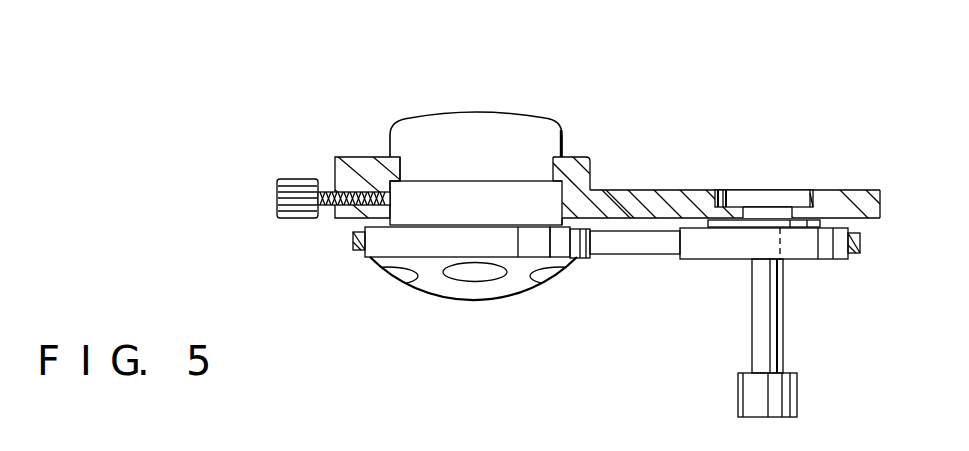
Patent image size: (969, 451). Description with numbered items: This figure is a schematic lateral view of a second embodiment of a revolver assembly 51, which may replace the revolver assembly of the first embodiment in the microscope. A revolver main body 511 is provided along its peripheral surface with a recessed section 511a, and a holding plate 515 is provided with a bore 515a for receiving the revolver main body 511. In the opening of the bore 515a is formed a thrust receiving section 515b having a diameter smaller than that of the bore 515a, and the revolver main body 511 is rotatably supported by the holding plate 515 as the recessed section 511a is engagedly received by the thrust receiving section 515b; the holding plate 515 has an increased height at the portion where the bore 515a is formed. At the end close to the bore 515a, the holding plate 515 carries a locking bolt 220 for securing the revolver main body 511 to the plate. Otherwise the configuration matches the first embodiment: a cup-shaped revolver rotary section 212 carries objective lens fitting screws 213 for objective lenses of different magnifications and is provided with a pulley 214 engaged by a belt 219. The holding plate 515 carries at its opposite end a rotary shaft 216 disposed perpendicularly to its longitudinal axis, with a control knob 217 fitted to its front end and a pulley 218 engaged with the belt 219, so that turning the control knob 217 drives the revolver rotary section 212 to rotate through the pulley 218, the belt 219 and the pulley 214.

The revolver assembly 51 is at (420, 29).
The revolver main body 511 is at (413, 140).
The recessed section 511a is at (460, 167).
The thrust receiving section 515b is at (560, 183).
The bore 515a is at (568, 183).
The holding plate 515 is at (665, 207).
The locking bolt 220 is at (298, 178).
The objective lens fitting screws 213 is at (480, 273).
The pulley 214 is at (512, 245).
The revolver rotary section 212 is at (437, 285).
The belt 219 is at (625, 245).
The pulley 218 is at (718, 250).
The rotary shaft 216 is at (767, 320).
The control knob 217 is at (782, 392).